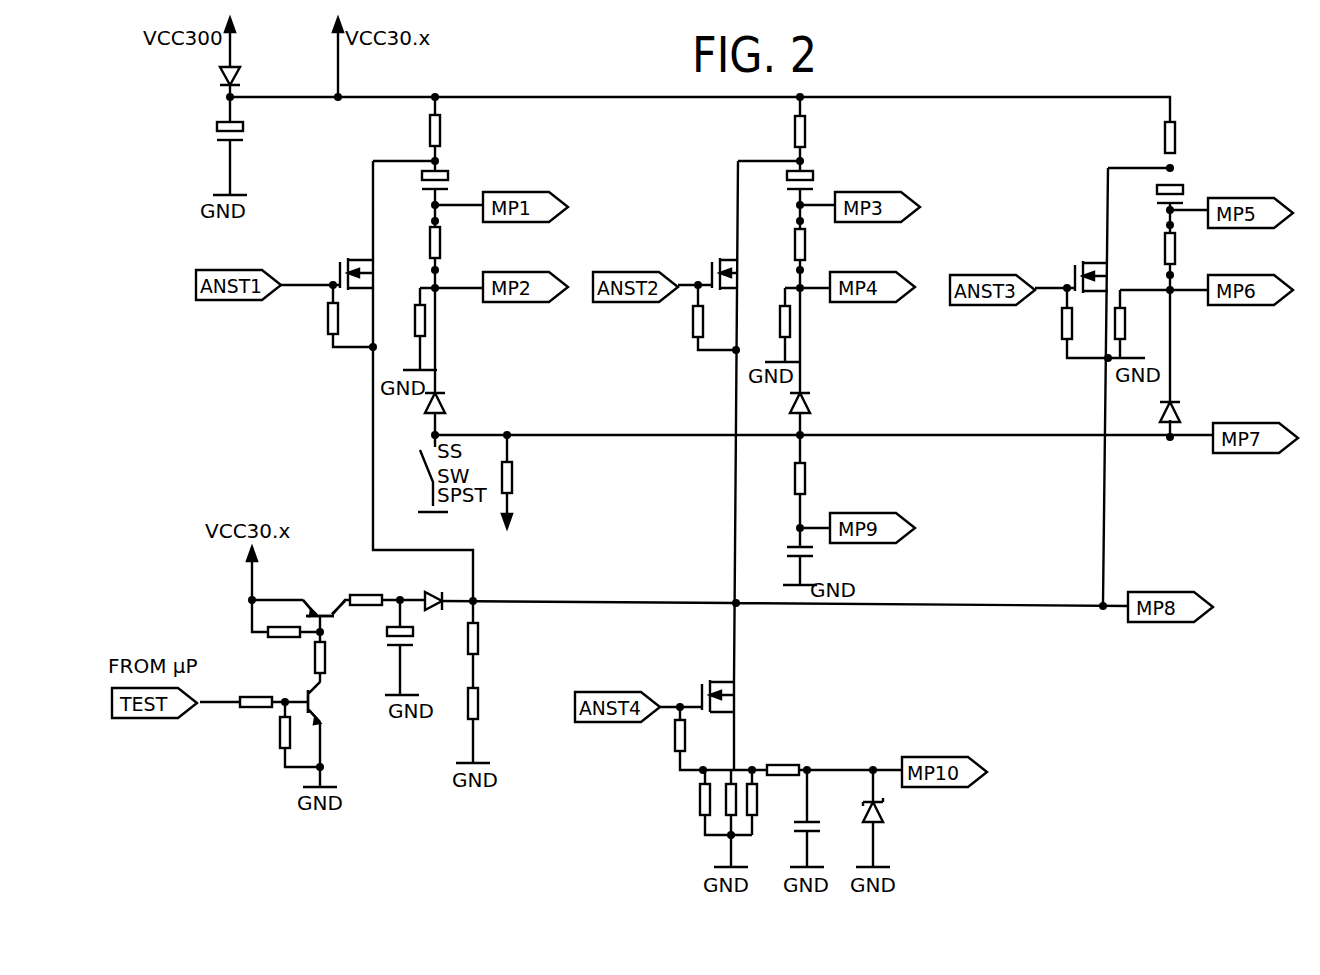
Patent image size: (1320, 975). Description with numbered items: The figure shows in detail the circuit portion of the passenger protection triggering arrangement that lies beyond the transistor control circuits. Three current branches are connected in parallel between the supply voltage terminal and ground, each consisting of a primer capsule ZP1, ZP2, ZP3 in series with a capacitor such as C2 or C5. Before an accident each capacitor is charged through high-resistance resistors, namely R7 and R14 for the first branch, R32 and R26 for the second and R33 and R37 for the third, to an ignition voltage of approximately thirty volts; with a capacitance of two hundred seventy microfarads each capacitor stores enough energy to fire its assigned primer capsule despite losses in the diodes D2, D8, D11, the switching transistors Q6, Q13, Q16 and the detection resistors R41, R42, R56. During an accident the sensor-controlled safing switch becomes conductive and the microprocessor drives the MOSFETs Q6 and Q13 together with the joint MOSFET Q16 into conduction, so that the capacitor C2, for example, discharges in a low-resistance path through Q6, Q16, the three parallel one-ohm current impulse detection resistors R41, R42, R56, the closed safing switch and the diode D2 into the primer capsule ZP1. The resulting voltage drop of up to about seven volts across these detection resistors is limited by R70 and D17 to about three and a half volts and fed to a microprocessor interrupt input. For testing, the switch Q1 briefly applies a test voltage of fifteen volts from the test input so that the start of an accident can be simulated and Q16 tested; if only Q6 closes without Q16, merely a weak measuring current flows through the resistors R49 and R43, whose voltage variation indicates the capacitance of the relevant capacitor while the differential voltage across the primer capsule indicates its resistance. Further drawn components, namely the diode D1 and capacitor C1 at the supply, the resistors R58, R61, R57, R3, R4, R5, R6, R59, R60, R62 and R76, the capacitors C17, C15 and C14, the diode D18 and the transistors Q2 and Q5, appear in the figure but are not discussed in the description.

The diode IN4004 D1 is at (267, 67).
The capacitor 100u C1 is at (256, 138).
The high-resistance resistor R7 is at (452, 128).
The capacitor C2 is at (462, 170).
The primer capsule ZP1 is at (458, 241).
The MOSFET switch Q6 is at (387, 256).
The resistor 15K R58 is at (305, 323).
The high-resistance resistor R14 is at (399, 324).
The diode D2 is at (471, 401).
The resistor 68K R61 is at (529, 490).
The resistor R57 is at (370, 587).
The diode D18 is at (442, 589).
The switch Q1 is at (303, 582).
The resistor 20K R3 is at (284, 634).
The resistor 50K R4 is at (342, 656).
The transistor BCB46 Q2 is at (348, 707).
The resistor 20K R5 is at (256, 703).
The resistor 10K R6 is at (304, 738).
The capacitor 0.47u C17 is at (425, 659).
The measuring resistor R49 is at (495, 639).
The measuring resistor R43 is at (495, 704).
The high-resistance resistor R32 is at (823, 128).
The capacitor C5 is at (1011, 175).
The primer capsule ZP2 is at (823, 244).
The MOSFET BUZ71A Q5 is at (757, 262).
The resistor 15K R59 is at (673, 329).
The high-resistance resistor R26 is at (765, 329).
The diode D8 is at (835, 407).
The resistor 68K R76 is at (822, 481).
The capacitor 100p C15 is at (775, 557).
The high-resistance resistor R33 is at (1192, 130).
The primer capsule ZP3 is at (1193, 248).
The MOSFET switch Q13 is at (1124, 264).
The resistor 15K R60 is at (1043, 331).
The high-resistance resistor R37 is at (1141, 331).
The diode D11 is at (1207, 396).
The joint MOSFET switch Q16 is at (760, 698).
The resistor 15K R62 is at (702, 735).
The limiting resistor R70 is at (787, 770).
The current impulse detection resistor R41 is at (700, 803).
The current impulse detection resistor R56 is at (724, 818).
The current impulse detection resistor R42 is at (770, 788).
The capacitor 470p C14 is at (833, 820).
The diode D17 is at (895, 805).